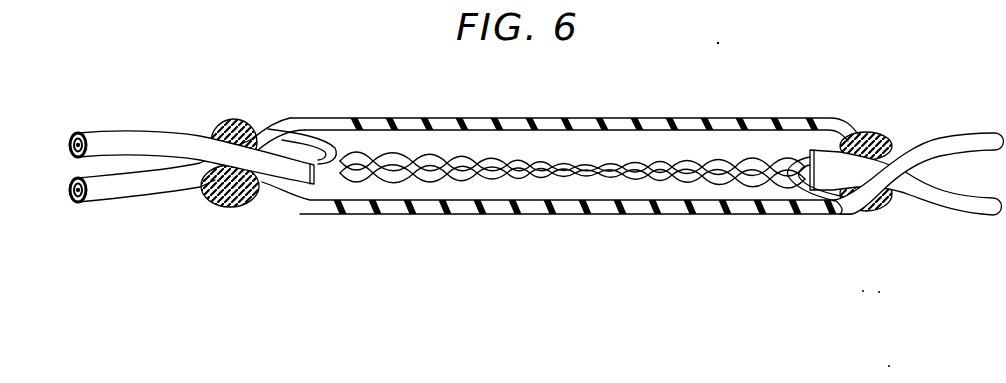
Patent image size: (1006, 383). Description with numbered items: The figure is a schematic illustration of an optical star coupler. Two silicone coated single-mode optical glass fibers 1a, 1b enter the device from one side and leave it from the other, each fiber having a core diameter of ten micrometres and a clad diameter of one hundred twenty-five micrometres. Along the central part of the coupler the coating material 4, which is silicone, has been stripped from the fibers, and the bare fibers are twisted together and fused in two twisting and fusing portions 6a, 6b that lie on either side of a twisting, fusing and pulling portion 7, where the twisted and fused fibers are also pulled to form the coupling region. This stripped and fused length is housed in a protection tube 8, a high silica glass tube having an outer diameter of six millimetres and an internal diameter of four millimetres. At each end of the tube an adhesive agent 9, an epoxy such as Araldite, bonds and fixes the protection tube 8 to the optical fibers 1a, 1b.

The optical fiber 1a is at (158, 135).
The optical fiber 1b is at (153, 203).
The coating material 4 is at (78, 132).
The twisting and fusing portion 6a is at (505, 234).
The twisting and fusing portion 6b is at (815, 234).
The twisting, fusing and pulling portion 7 is at (668, 234).
The protection tube 8 is at (590, 123).
The adhesive agent 9 is at (236, 205).